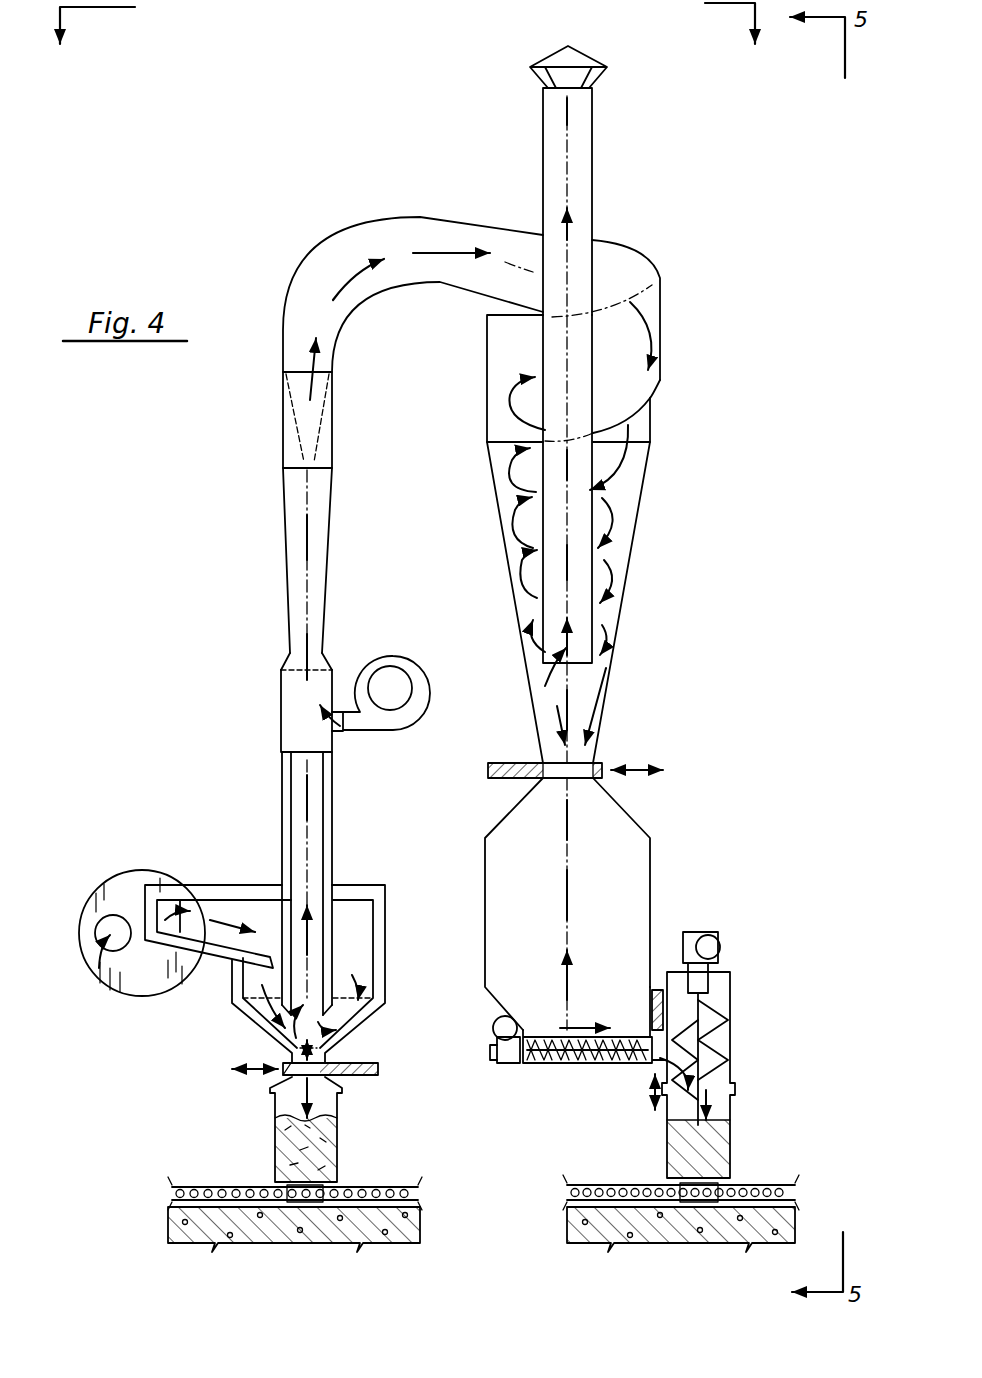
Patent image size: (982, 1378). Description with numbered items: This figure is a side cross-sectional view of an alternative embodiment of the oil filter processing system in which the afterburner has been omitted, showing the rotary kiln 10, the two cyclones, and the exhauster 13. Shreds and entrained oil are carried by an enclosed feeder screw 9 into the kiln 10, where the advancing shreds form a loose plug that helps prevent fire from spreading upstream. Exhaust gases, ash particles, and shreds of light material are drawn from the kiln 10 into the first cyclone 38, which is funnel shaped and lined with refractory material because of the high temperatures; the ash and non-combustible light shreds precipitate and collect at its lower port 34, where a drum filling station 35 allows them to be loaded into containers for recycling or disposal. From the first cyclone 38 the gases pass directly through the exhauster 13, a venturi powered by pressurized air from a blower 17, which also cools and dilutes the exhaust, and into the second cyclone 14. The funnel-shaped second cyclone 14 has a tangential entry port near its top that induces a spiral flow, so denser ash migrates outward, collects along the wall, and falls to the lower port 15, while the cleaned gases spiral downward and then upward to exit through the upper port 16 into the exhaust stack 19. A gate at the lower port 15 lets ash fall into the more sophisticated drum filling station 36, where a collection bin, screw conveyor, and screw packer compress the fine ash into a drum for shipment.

The feeder screw 9 is at (102, 923).
The kiln 10 is at (130, 878).
The exhauster 13 is at (290, 663).
The second cyclone 14 is at (508, 380).
The lower port 15 is at (575, 765).
The upper port 16 is at (577, 612).
The blower 17 is at (392, 686).
The exhaust stack 19 is at (583, 108).
The lower port 34 is at (317, 1063).
The drum filling station 35 is at (337, 1140).
The drum filling station 36 is at (618, 1088).
The first cyclone 38 is at (243, 912).